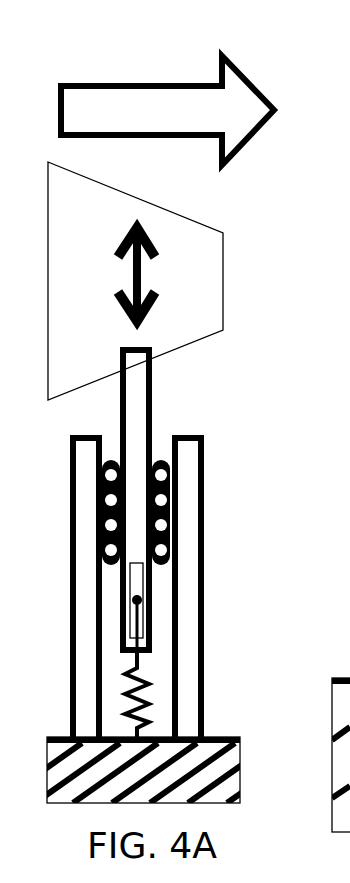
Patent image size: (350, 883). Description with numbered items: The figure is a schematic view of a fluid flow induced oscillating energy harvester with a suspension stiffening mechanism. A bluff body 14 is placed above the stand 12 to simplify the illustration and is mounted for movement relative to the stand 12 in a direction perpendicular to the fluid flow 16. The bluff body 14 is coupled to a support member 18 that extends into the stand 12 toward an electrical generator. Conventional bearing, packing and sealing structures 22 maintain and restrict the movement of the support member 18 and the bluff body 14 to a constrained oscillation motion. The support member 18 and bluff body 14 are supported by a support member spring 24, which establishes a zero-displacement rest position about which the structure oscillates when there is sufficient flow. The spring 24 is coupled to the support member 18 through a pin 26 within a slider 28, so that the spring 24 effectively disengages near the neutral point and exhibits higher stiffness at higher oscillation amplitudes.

The stand 12 is at (203, 493).
The bluff body 14 is at (225, 253).
The fluid flow 16 is at (185, 83).
The support member 18 is at (153, 402).
The bearing, packing and sealing structures 22 is at (157, 462).
The support member spring 24 is at (148, 680).
The pin 26 is at (153, 600).
The slider 28 is at (135, 582).